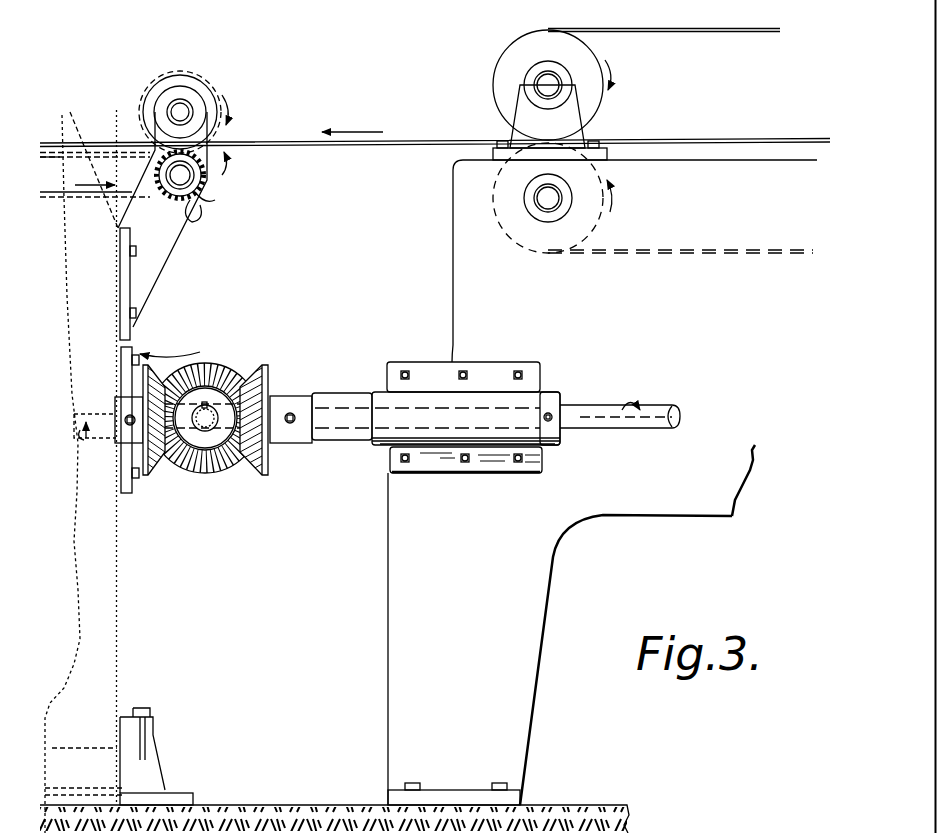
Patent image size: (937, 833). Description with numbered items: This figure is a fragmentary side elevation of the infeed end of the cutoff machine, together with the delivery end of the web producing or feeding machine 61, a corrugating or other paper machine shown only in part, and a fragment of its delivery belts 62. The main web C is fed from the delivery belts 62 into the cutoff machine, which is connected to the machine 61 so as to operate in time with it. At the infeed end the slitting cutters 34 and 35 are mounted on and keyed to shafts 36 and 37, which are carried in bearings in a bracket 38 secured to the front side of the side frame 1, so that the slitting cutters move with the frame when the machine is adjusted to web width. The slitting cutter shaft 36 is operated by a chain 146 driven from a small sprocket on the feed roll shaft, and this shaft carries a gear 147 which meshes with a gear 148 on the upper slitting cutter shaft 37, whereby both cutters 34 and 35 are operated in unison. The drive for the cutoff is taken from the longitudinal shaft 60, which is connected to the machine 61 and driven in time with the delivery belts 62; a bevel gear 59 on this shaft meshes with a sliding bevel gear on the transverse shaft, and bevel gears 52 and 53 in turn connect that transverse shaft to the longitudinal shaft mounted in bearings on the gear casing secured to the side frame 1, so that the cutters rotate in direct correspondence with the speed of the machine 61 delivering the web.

The side frame 1 is at (117, 580).
The main web C is at (432, 141).
The slitting cutter 34 is at (212, 84).
The slitting cutter 35 is at (148, 187).
The slitting cutter shaft 36 is at (190, 222).
The upper slitting cutter shaft 37 is at (172, 112).
The bracket 38 is at (140, 285).
The bevel gear 52 is at (155, 473).
The bevel gear 53 is at (220, 477).
The bevel gear 59 is at (272, 466).
The longitudinal shaft 60 is at (593, 400).
The web producing or feeding machine 61 is at (453, 292).
The delivery belts 62 is at (733, 32).
The chain 146 is at (82, 198).
The gear 147 is at (205, 198).
The gear 148 is at (186, 78).